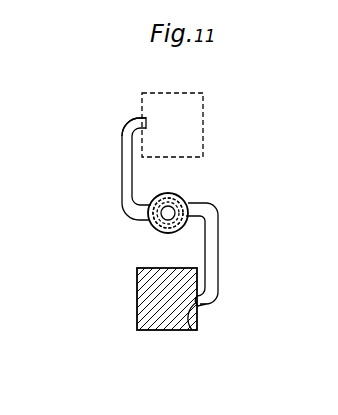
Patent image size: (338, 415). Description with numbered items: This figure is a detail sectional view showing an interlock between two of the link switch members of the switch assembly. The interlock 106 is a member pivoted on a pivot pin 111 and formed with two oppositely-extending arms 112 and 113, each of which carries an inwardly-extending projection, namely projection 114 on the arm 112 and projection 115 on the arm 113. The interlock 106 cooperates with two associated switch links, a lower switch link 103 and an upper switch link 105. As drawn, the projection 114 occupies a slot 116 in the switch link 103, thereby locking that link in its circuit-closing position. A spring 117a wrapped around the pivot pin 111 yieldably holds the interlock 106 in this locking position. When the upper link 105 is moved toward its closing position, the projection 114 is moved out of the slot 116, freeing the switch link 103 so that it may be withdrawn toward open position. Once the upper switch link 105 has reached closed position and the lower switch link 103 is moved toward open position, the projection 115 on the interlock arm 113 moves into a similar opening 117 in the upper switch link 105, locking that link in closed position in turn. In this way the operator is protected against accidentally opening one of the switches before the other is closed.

The switch link 103 is at (145, 306).
The upper switch link 105 is at (203, 122).
The interlock 106 is at (170, 193).
The pivot pin 111 is at (167, 216).
The interlock arm 112 is at (214, 247).
The interlock arm 113 is at (125, 168).
The projection 114 is at (206, 303).
The projection 115 is at (142, 119).
The slot 116 is at (190, 331).
The opening 117 is at (148, 121).
The spring 117a is at (186, 206).